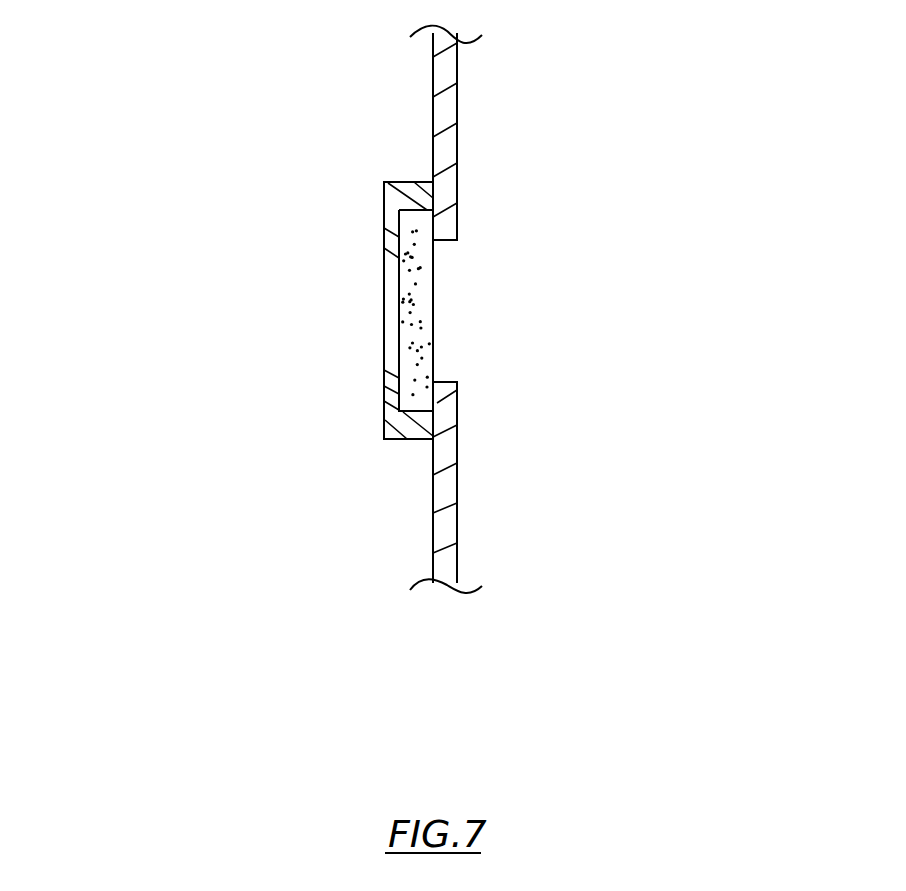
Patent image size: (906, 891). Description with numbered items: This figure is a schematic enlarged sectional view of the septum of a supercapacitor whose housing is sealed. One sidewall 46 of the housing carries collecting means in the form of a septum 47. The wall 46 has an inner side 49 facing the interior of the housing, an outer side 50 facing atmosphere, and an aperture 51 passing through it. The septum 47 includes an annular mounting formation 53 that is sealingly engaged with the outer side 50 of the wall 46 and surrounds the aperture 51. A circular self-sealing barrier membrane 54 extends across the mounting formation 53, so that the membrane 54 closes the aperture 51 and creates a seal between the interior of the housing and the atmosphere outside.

The sidewall 46 is at (440, 101).
The septum 47 is at (350, 397).
The inner side 49 is at (474, 106).
The outer side 50 is at (411, 517).
The aperture 51 is at (466, 302).
The annular mounting formation 53 is at (386, 198).
The self-sealing barrier membrane 54 is at (415, 290).